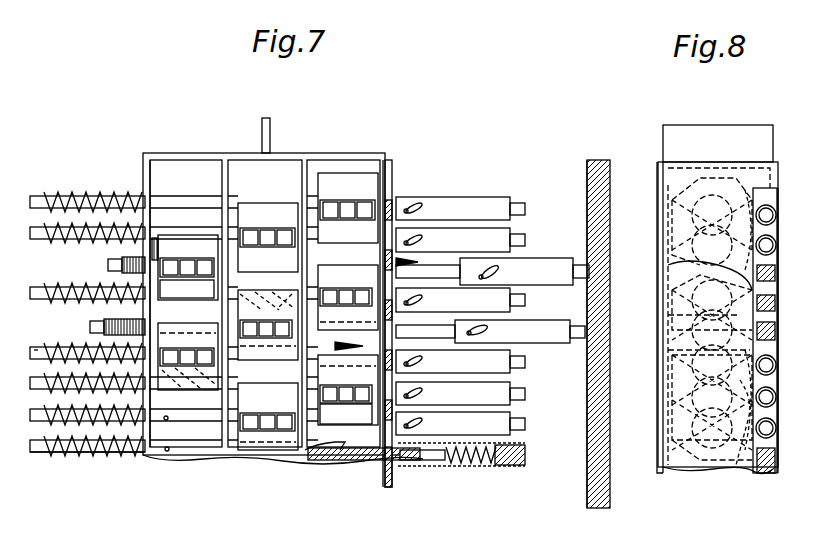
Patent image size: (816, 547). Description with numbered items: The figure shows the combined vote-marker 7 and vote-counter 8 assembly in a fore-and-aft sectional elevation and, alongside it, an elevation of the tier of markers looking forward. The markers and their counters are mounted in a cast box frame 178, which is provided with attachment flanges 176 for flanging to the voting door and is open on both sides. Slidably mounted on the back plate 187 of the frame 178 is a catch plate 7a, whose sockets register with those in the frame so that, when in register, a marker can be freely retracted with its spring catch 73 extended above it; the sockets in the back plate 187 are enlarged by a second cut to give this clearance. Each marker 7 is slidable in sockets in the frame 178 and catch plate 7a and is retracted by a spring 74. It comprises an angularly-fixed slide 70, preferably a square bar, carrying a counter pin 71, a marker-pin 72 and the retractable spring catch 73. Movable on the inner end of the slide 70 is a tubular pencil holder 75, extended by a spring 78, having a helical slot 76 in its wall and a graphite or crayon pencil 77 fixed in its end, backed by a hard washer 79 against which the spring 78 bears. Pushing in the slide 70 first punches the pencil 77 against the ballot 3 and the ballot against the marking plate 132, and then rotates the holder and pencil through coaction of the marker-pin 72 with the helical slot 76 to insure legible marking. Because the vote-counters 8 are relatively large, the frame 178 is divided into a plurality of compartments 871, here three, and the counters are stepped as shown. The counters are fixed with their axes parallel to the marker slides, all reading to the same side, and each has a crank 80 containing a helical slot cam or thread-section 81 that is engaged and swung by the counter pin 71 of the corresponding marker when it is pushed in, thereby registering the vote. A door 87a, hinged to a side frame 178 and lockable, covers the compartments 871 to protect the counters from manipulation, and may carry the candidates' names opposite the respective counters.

In FIG. 7, the ballot 3 is at (586, 468).
In FIG. 7, the vote-marker 7 is at (28, 352).
In FIG. 7, the catch plate 7a is at (393, 177).
In FIG. 8, the catch plate 7a is at (742, 466).
In FIG. 7, the vote-counter 8 is at (266, 353).
In FIG. 8, the vote-counter 8 is at (669, 266).
In FIG. 7, the slide 70 is at (60, 195).
In FIG. 8, the slide 70 is at (775, 306).
In FIG. 7, the counter pin 71 is at (170, 202).
In FIG. 7, the marker-pin 72 is at (464, 316).
In FIG. 7, the spring catch 73 is at (421, 251).
In FIG. 8, the spring catch 73 is at (774, 258).
In FIG. 7, the spring 74 is at (102, 460).
In FIG. 7, the tubular pencil holder 75 is at (486, 466).
In FIG. 8, the tubular pencil holder 75 is at (782, 372).
In FIG. 7, the helical slot 76 is at (431, 390).
In FIG. 7, the pencil 77 is at (519, 370).
In FIG. 8, the pencil 77 is at (774, 210).
In FIG. 7, the spring 78 is at (428, 464).
In FIG. 7, the hard washer 79 is at (496, 445).
In FIG. 7, the crank 80 is at (160, 250).
In FIG. 8, the crank 80 is at (776, 328).
In FIG. 7, the helical slot cam 81 is at (280, 284).
In FIG. 8, the helical slot cam 81 is at (690, 310).
In FIG. 8, the door 87a is at (661, 473).
In FIG. 7, the marking plate 132 is at (612, 478).
In FIG. 7, the attachment flange 176 is at (270, 142).
In FIG. 8, the attachment flange 176 is at (675, 140).
In FIG. 7, the box frame 178 is at (202, 154).
In FIG. 8, the box frame 178 is at (673, 183).
In FIG. 7, the back plate 187 is at (393, 162).
In FIG. 7, the compartment 871 is at (283, 184).